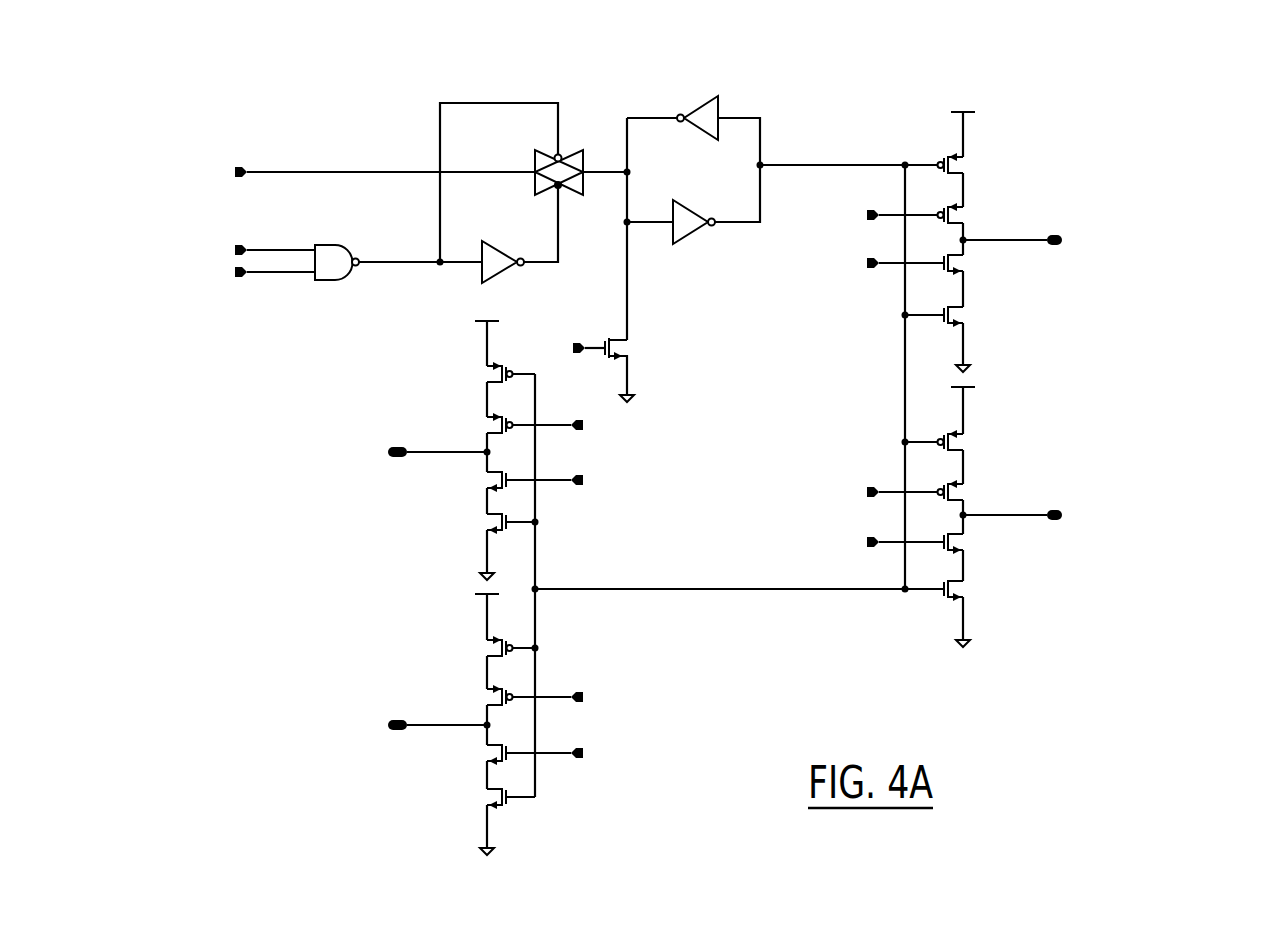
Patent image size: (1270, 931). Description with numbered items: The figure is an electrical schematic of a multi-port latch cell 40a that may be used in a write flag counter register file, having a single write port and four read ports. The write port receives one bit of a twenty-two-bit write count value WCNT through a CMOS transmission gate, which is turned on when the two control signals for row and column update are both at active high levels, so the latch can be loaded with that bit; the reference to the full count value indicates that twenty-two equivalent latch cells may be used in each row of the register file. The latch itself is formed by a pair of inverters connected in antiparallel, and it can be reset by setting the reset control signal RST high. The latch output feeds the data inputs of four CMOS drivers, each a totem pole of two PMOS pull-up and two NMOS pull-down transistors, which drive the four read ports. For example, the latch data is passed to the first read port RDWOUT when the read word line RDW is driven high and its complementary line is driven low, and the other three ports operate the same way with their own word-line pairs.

The multi-port latch cell 40a is at (1108, 103).
The write count value WCNT is at (357, 173).
The reset control signal RST is at (571, 349).
The read word line RDW is at (877, 264).
The first read port RDWOUT is at (1102, 241).